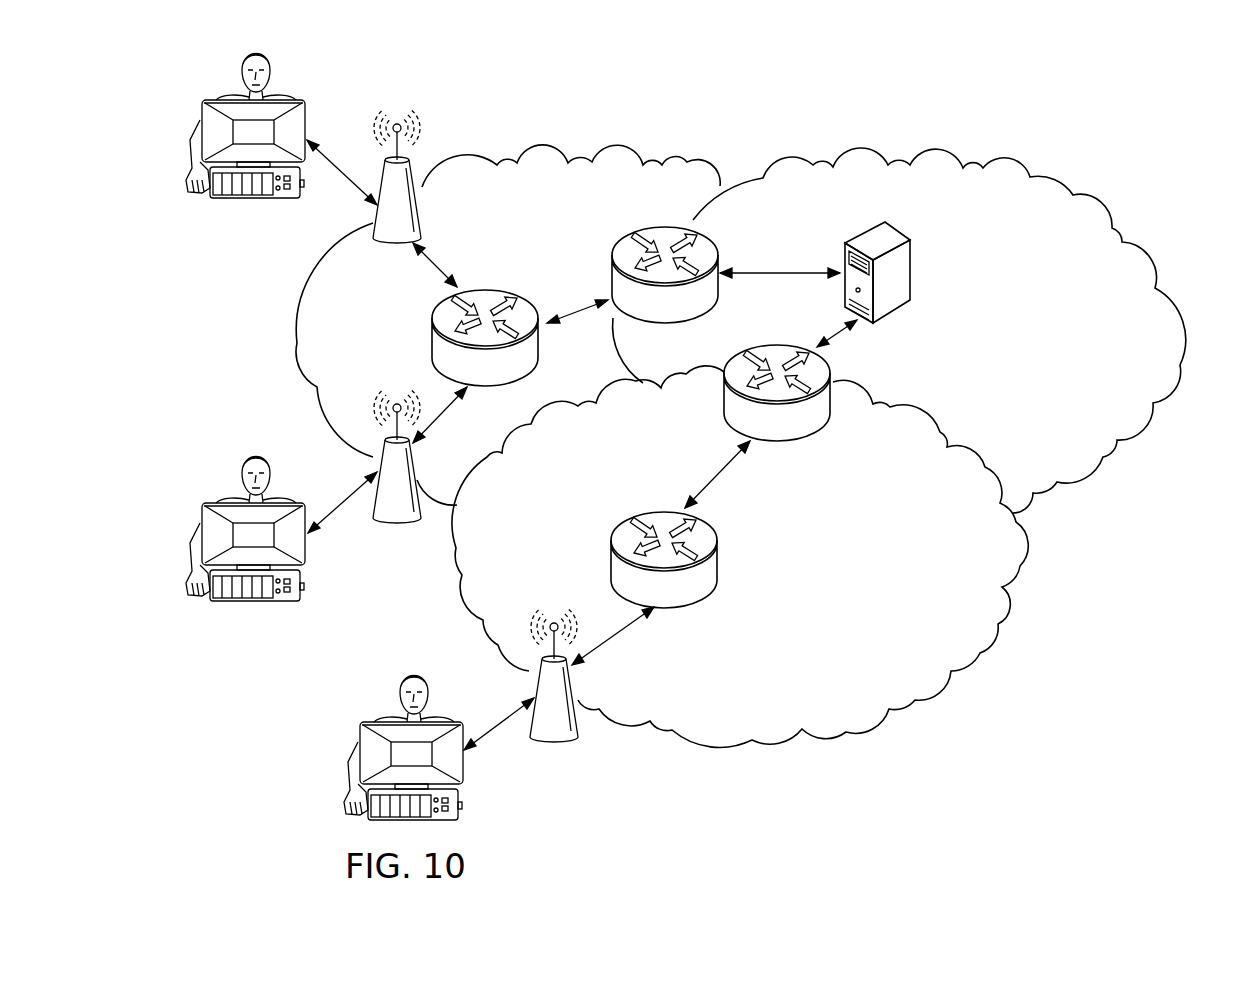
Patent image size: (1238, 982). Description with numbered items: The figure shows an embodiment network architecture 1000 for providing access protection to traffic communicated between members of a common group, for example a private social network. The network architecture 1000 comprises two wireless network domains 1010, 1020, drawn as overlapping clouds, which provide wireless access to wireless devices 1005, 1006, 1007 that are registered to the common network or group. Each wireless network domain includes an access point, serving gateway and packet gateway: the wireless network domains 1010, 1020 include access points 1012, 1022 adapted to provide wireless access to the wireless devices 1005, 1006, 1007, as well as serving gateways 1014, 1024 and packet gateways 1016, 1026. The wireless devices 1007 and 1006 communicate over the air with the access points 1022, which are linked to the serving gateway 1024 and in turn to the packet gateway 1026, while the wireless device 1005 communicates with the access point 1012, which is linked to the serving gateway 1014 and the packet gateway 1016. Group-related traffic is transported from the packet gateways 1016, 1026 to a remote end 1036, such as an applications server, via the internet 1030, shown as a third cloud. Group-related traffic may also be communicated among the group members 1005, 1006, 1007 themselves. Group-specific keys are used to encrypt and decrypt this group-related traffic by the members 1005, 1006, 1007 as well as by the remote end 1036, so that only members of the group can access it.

The network architecture 1000 is at (823, 115).
The wireless network domain 1010 is at (931, 703).
The wireless network domain 1020 is at (542, 147).
The internet 1030 is at (1015, 160).
The wireless device 1005 is at (358, 752).
The wireless device 1006 is at (200, 537).
The wireless device 1007 is at (200, 130).
The access point 1012 is at (545, 740).
The serving gateway 1014 is at (718, 560).
The packet gateway 1016 is at (778, 343).
The access point 1022 is at (392, 240).
The serving gateway 1024 is at (487, 287).
The packet gateway 1026 is at (663, 223).
The remote end 1036 is at (912, 258).